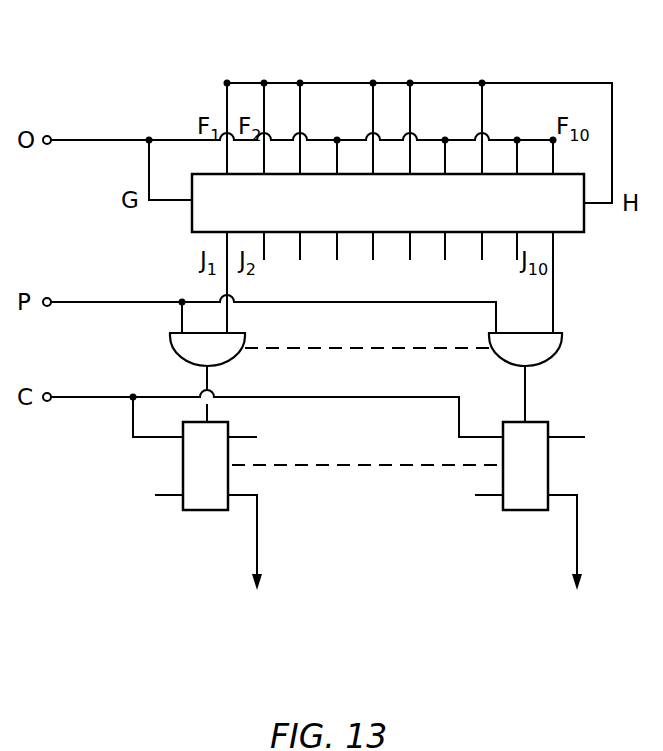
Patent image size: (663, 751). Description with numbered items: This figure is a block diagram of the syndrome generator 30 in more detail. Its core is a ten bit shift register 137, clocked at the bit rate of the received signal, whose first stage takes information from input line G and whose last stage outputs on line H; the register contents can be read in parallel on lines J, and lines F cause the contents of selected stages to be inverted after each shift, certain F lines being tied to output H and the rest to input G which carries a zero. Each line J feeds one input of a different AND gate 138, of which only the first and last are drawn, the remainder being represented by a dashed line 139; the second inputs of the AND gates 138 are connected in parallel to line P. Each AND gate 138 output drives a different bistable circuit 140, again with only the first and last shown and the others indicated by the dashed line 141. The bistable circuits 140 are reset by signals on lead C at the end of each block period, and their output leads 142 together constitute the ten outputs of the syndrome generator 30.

The syndrome generator 30 is at (531, 74).
The 10 bit shift register 137 is at (203, 221).
The AND gate 138 is at (181, 348).
The dashed line 139 is at (394, 349).
The bistable circuit 140 is at (185, 472).
The dashed line 141 is at (385, 470).
The output lead 142 is at (253, 560).